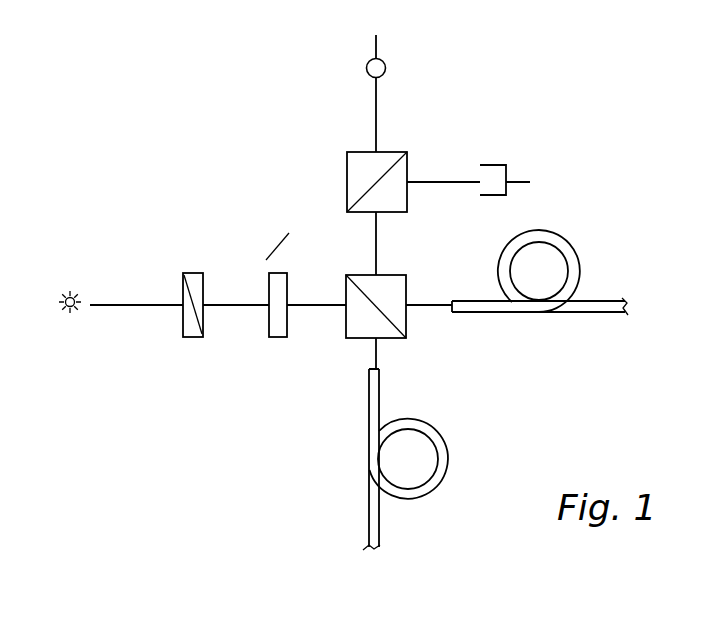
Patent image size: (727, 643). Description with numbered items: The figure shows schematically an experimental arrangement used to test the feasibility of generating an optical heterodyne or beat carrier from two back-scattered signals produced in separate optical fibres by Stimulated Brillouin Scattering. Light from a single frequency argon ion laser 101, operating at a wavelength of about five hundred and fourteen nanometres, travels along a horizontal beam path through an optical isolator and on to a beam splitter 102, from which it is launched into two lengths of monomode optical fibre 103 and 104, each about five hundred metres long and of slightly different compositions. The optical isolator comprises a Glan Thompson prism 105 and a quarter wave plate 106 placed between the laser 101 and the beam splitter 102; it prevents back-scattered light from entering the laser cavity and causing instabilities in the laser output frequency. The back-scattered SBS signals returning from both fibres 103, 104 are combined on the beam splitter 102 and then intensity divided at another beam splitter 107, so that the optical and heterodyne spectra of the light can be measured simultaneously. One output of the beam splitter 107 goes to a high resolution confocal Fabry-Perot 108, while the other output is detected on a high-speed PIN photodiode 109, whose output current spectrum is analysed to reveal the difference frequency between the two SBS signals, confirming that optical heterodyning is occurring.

The single frequency argon ion laser 101 is at (65, 289).
The beam splitter 102 is at (410, 287).
The monomode optical fibre 103 is at (581, 266).
The monomode optical fibre 104 is at (451, 451).
The Glan Thompson prism 105 is at (182, 280).
The quarter wave plate 106 is at (267, 284).
The beam splitter 107 is at (345, 168).
The confocal Fabry-Perot 108 is at (389, 66).
The high-speed PIN photodiode 109 is at (497, 164).